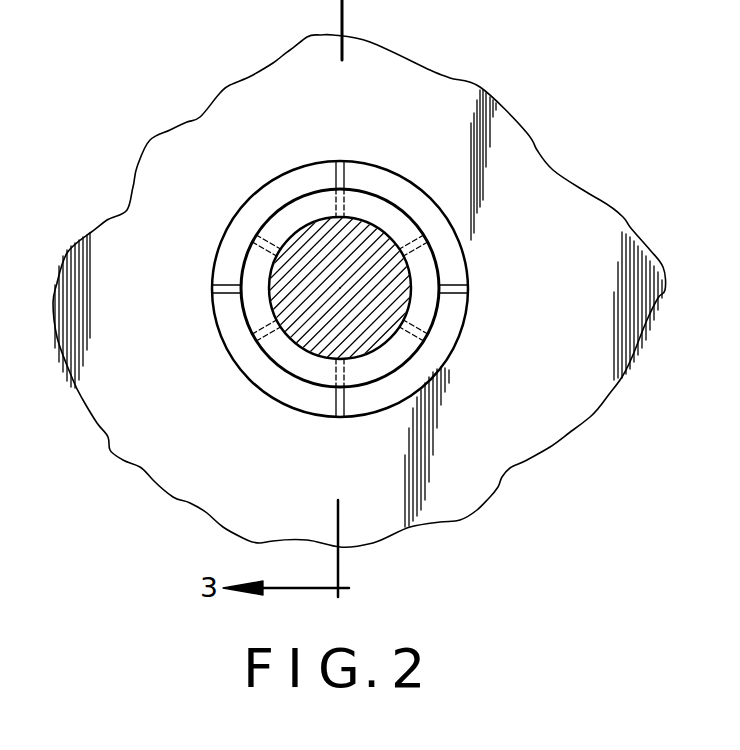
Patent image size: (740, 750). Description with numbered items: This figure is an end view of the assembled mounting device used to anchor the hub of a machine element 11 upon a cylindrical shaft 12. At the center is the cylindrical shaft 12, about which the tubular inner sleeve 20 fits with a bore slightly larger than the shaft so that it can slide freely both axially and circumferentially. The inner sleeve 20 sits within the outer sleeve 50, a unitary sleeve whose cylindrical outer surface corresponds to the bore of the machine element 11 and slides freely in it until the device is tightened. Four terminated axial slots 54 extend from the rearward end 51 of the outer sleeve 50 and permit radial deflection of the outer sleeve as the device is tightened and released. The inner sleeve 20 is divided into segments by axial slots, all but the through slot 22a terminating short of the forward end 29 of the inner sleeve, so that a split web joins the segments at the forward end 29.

The machine element 11 is at (547, 177).
The cylindrical shaft 12 is at (368, 322).
The inner sleeve 20 is at (403, 203).
The through slot 22a is at (353, 193).
The forward end of the inner sleeve 29 is at (250, 307).
The outer sleeve 50 is at (470, 313).
The rearward end of the outer sleeve 51 is at (270, 382).
The axial slots 54 is at (330, 190).